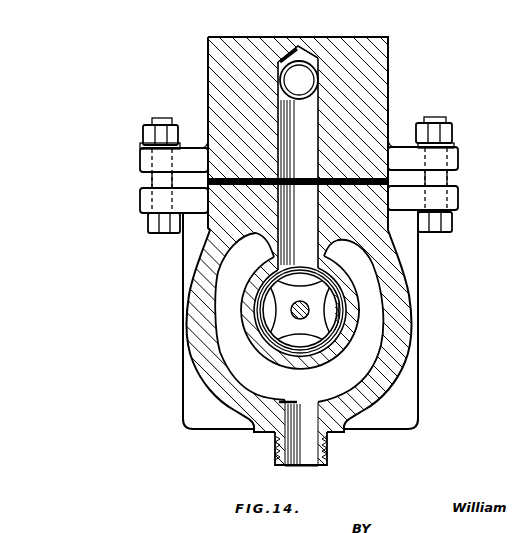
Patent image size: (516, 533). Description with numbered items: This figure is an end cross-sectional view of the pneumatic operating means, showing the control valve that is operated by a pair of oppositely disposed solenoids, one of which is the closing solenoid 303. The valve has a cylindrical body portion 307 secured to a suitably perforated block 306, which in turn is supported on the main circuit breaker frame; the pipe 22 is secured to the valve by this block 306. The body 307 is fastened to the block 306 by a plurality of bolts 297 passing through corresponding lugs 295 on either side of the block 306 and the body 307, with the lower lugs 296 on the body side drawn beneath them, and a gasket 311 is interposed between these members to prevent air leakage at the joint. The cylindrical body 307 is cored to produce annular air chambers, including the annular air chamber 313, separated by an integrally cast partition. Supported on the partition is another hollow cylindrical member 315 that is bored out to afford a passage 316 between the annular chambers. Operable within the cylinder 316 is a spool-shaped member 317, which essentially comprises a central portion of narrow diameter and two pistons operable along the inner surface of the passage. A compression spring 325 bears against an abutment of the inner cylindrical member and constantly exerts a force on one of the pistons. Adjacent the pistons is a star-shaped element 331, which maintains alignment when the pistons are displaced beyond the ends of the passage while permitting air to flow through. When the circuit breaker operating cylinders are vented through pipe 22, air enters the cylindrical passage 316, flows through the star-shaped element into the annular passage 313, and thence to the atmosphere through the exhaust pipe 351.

The pipe 22 is at (310, 62).
The block 306 is at (388, 37).
The gasket 311 is at (388, 125).
The lugs 295 is at (148, 160).
The lower flange 296 is at (143, 200).
The bolts 297 is at (147, 223).
The spool-shaped member 317 is at (291, 308).
The star-shaped element 331 is at (274, 327).
The passage 316 is at (330, 310).
The compression spring 325 is at (340, 318).
The hollow cylindrical member 315 is at (347, 343).
The annular air chamber 313 is at (355, 366).
The closing solenoid 303 is at (455, 386).
The cylindrical body portion 307 is at (368, 409).
The exhaust pipe 351 is at (328, 458).